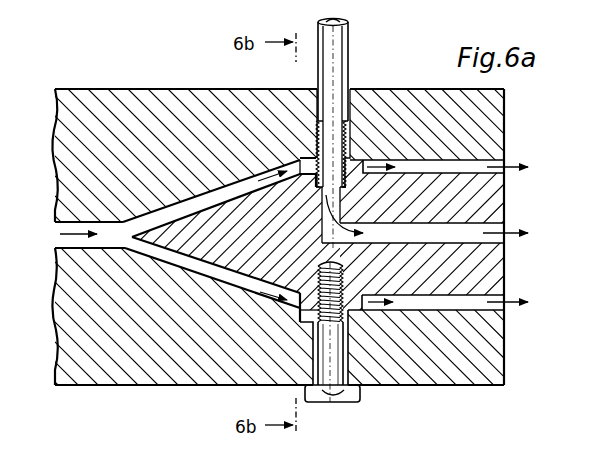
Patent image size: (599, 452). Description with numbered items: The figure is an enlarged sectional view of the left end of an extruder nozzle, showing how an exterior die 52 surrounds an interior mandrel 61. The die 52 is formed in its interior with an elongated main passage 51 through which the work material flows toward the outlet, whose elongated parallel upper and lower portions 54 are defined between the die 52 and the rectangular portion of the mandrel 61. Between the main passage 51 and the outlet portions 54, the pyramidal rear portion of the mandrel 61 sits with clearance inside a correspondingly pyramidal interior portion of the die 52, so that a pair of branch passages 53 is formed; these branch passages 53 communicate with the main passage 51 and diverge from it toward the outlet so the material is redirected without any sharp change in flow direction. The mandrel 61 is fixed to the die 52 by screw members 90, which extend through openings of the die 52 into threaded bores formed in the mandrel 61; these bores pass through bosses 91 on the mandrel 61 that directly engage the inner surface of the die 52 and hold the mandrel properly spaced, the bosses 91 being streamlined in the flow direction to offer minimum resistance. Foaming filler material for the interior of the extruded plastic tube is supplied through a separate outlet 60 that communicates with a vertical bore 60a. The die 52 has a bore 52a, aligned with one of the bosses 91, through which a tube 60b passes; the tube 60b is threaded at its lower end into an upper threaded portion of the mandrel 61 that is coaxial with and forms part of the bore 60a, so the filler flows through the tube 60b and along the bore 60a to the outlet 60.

The main passage 51 is at (55, 247).
The exterior die 52 is at (222, 369).
The bore 52a is at (310, 87).
The branch passages 53 is at (192, 266).
The upper and lower portions of outlet 54 is at (485, 306).
The outlet 60 is at (505, 222).
The vertical bore 60a is at (335, 135).
The tube 60b is at (339, 60).
The interior mandrel 61 is at (272, 243).
The screw members 90 is at (333, 401).
The bosses 91 is at (303, 318).